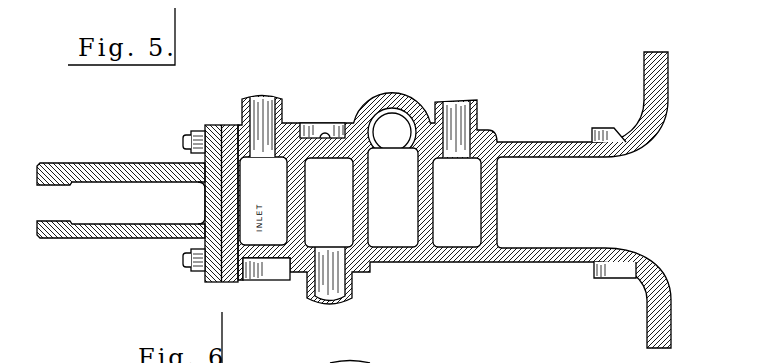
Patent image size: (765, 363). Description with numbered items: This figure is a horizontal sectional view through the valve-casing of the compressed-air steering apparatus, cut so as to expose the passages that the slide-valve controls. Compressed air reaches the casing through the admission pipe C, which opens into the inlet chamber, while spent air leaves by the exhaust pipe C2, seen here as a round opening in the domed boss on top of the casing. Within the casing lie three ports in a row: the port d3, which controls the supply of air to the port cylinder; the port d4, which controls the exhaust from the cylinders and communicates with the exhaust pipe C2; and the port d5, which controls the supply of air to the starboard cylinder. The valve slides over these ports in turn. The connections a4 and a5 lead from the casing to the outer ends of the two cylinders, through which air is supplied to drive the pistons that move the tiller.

The admission pipe C is at (268, 101).
The exhaust pipe C2 is at (393, 112).
The air-supply pipe a5 is at (477, 109).
The air-supply pipe a4 is at (312, 292).
The port d3 is at (329, 202).
The port d4 is at (393, 197).
The port d5 is at (457, 202).